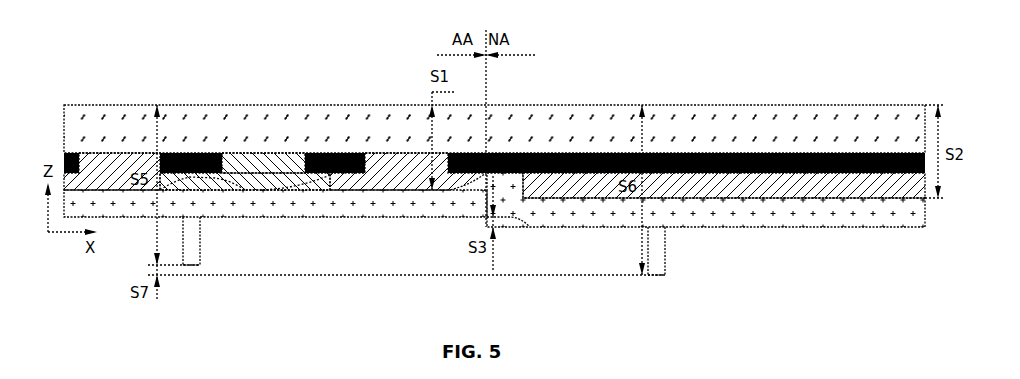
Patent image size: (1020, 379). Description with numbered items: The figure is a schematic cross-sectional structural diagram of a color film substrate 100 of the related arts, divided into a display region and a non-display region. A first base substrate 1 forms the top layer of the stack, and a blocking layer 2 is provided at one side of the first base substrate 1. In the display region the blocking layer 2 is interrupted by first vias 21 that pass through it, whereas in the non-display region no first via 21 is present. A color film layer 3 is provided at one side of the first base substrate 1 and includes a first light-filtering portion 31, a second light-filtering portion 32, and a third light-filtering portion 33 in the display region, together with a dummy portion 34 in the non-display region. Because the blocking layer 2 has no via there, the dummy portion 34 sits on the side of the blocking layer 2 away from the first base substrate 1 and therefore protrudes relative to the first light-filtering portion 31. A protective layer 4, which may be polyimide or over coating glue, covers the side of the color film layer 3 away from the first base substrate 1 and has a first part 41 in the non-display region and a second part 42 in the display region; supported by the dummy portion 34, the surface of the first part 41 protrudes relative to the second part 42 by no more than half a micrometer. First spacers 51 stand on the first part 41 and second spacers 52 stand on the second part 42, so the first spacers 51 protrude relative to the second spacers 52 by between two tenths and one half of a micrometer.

The color film substrate 100 is at (113, 79).
The first base substrate 1 is at (403, 123).
The blocking layer 2 is at (344, 153).
The first via 21 is at (303, 153).
The color film layer 3 is at (494, 149).
The first light-filtering portion 31 is at (412, 183).
The second light-filtering portion 32 is at (268, 190).
The third light-filtering portion 33 is at (110, 190).
The dummy portion 34 is at (762, 198).
The protective layer 4 is at (494, 157).
The first part 41 is at (560, 220).
The second part 42 is at (353, 218).
The first spacer 51 is at (665, 255).
The second spacer 52 is at (200, 240).